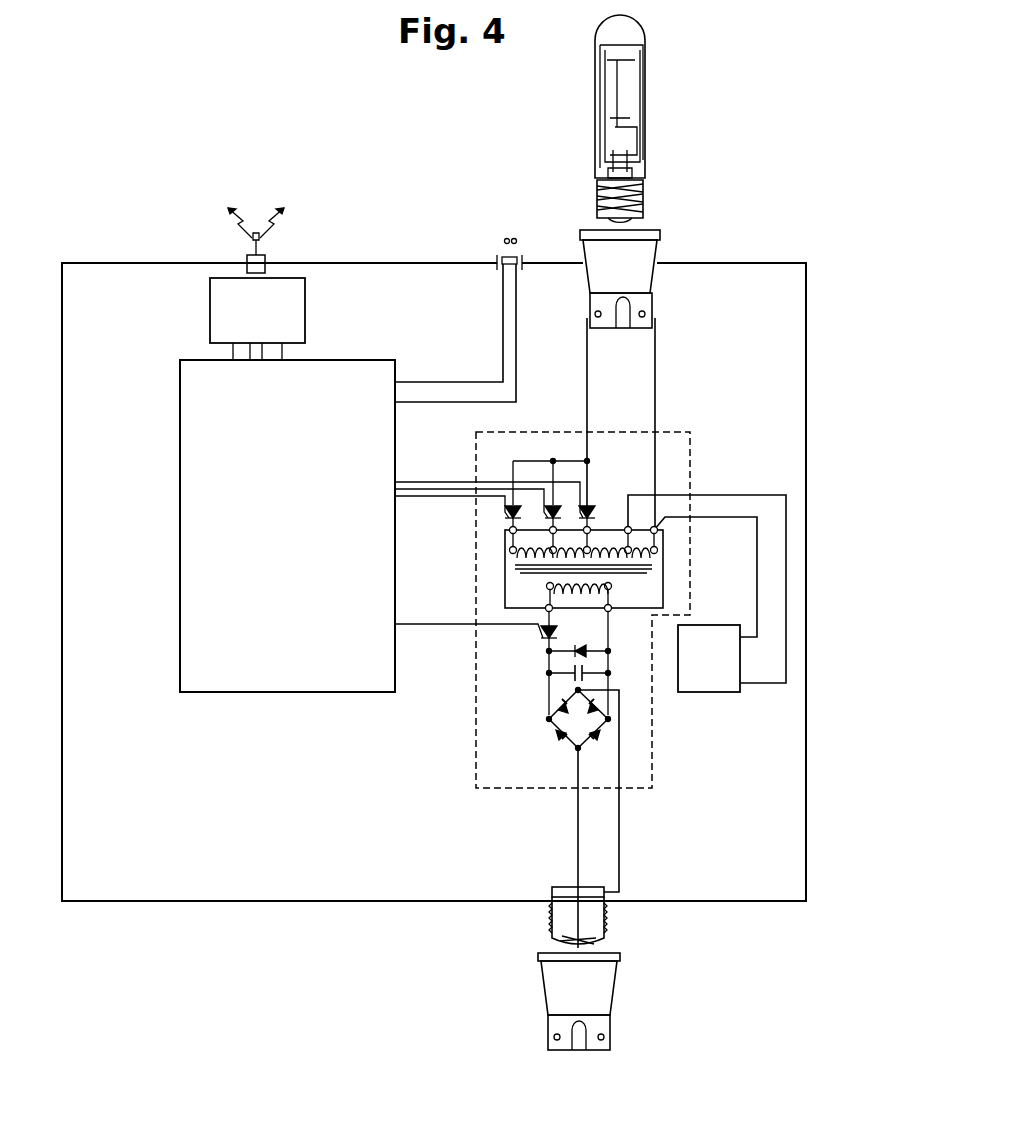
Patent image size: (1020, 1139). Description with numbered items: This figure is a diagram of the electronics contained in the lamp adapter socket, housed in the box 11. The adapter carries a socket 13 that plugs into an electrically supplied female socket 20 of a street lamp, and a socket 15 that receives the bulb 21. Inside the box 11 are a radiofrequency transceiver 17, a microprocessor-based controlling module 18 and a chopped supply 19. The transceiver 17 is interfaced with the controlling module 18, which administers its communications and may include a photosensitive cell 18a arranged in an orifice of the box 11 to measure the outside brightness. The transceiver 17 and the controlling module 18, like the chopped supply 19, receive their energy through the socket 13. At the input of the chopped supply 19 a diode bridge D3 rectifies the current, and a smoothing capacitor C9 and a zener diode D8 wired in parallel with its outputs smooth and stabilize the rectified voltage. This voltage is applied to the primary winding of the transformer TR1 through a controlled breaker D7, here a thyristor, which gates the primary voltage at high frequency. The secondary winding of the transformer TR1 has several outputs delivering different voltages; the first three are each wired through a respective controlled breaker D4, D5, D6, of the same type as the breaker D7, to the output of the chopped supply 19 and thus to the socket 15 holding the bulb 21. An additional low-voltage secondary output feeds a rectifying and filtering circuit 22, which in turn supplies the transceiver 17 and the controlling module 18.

The box 11 is at (153, 901).
The socket 13 is at (600, 918).
The socket 15 is at (660, 242).
The radiofrequency transceiver 17 is at (305, 295).
The controlling module 18 is at (315, 677).
The photosensitive cell 18a is at (500, 257).
The chopped supply 19 is at (496, 790).
The female socket 20 is at (555, 995).
The bulb 21 is at (597, 198).
The rectifying and filtering circuit 22 is at (722, 685).
The transformer TR1 is at (584, 569).
The diode bridge D3 is at (573, 722).
The controlled breaker D4 is at (505, 516).
The controlled breaker D5 is at (547, 514).
The controlled breaker D6 is at (590, 514).
The controlled breaker D7 is at (541, 636).
The zener diode D8 is at (579, 663).
The smoothing capacitor C9 is at (584, 672).